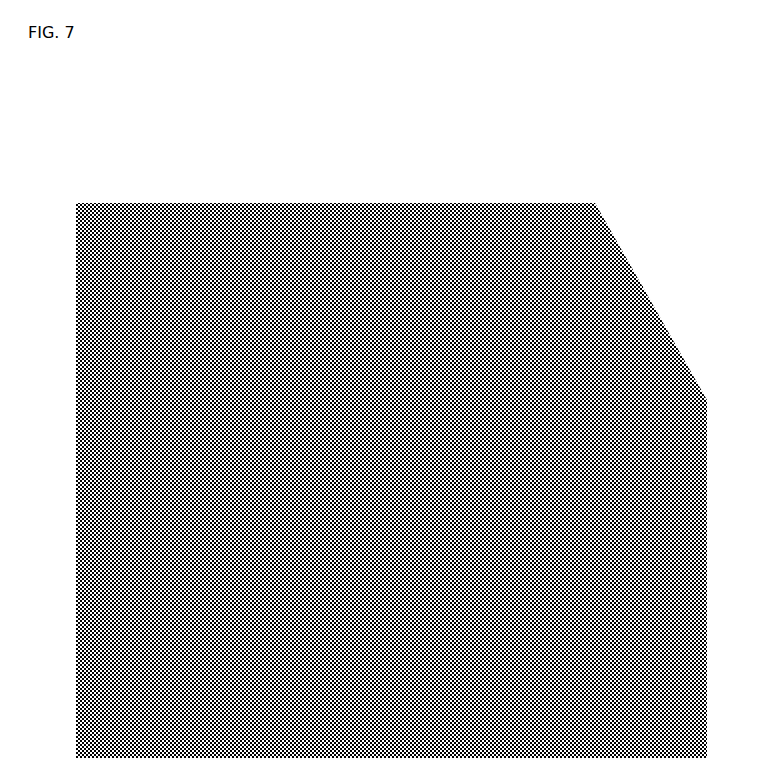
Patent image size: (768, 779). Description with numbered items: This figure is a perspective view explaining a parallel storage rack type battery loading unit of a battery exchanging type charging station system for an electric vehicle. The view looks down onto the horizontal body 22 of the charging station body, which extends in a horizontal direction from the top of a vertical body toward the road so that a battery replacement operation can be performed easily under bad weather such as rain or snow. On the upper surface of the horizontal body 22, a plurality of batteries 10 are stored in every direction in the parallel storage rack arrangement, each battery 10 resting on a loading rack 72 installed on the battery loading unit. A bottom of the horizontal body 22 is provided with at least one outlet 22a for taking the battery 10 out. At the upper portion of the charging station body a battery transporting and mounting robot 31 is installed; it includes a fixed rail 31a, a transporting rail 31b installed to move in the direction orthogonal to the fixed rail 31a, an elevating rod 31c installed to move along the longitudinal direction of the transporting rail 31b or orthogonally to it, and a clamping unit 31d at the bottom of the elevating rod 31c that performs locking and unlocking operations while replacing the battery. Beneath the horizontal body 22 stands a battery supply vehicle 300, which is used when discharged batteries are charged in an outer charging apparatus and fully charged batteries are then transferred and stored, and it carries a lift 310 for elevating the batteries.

The horizontal body 22 is at (573, 190).
The outlet 22a is at (683, 365).
The battery transporting and mounting robot 31 is at (638, 198).
The fixed rail 31a is at (640, 302).
The transporting rail 31b is at (612, 250).
The elevating rod 31c is at (596, 228).
The clamping unit 31d is at (627, 274).
The battery 10 is at (187, 262).
The loading rack 72 is at (250, 258).
The lift 310 is at (646, 514).
The battery supply vehicle 300 is at (646, 566).